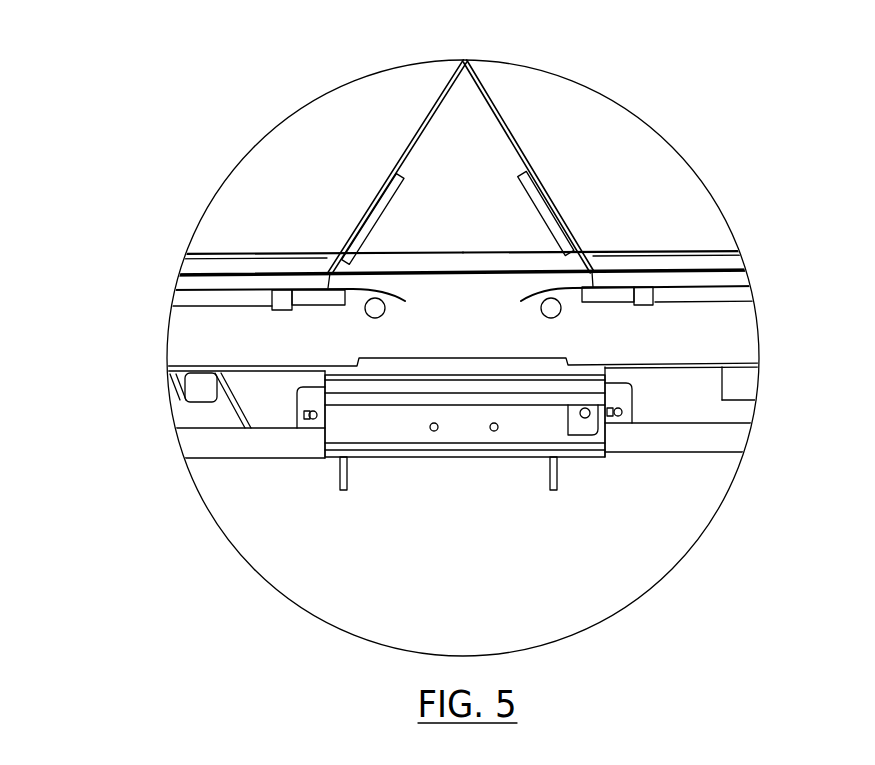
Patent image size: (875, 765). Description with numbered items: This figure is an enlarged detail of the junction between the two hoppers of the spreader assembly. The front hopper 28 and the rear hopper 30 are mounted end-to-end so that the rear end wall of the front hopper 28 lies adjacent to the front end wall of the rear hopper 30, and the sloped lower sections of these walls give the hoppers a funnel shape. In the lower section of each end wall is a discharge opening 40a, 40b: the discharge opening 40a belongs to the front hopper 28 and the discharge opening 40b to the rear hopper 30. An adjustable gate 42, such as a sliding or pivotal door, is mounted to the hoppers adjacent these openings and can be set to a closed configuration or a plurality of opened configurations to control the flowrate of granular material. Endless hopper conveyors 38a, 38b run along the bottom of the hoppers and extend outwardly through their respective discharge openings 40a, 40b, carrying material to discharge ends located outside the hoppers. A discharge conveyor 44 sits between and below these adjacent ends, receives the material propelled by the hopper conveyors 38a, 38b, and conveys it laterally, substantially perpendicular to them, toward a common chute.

The front hopper 28 is at (388, 122).
The rear hopper 30 is at (495, 105).
The adjustable gate 42 is at (363, 213).
The discharge opening 40a is at (323, 252).
The discharge opening 40b is at (570, 233).
The hopper conveyor 38a is at (245, 292).
The hopper conveyor 38b is at (592, 290).
The discharge conveyor 44 is at (423, 398).